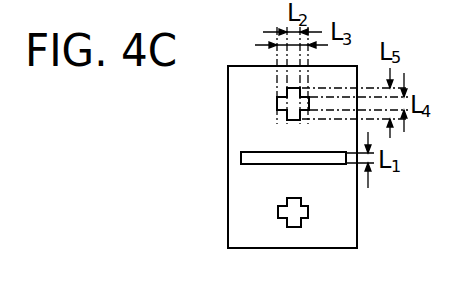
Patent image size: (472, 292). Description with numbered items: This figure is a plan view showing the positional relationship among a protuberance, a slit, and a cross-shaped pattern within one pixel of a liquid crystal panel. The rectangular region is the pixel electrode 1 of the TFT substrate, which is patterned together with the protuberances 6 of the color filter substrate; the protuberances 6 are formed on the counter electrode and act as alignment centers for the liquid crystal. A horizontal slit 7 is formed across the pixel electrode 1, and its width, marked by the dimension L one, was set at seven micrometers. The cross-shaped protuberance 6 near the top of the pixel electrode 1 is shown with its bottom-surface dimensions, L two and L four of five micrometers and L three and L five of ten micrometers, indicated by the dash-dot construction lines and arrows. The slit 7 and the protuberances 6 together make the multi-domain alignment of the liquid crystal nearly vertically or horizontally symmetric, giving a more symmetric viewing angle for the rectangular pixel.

The pixel electrode 1 is at (238, 227).
The protuberance 6 is at (278, 102).
The slit 7 is at (248, 158).